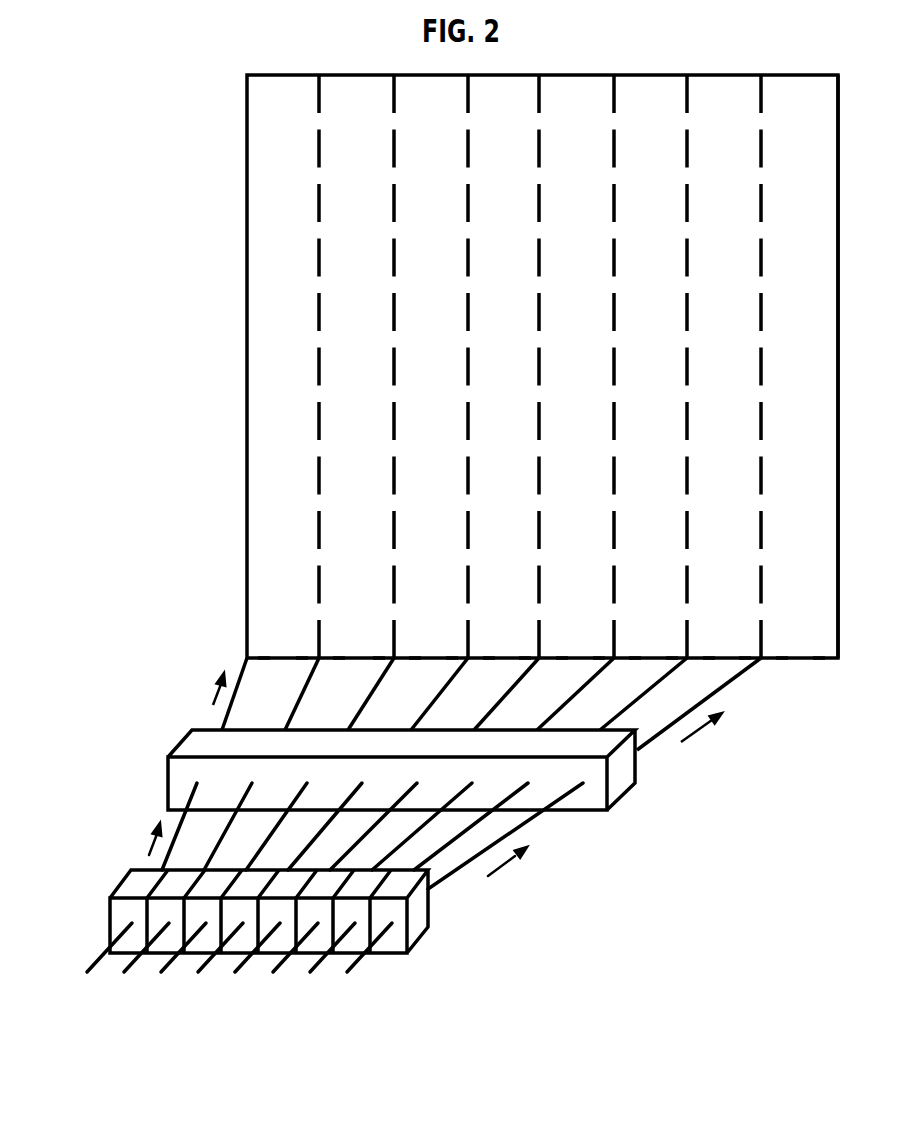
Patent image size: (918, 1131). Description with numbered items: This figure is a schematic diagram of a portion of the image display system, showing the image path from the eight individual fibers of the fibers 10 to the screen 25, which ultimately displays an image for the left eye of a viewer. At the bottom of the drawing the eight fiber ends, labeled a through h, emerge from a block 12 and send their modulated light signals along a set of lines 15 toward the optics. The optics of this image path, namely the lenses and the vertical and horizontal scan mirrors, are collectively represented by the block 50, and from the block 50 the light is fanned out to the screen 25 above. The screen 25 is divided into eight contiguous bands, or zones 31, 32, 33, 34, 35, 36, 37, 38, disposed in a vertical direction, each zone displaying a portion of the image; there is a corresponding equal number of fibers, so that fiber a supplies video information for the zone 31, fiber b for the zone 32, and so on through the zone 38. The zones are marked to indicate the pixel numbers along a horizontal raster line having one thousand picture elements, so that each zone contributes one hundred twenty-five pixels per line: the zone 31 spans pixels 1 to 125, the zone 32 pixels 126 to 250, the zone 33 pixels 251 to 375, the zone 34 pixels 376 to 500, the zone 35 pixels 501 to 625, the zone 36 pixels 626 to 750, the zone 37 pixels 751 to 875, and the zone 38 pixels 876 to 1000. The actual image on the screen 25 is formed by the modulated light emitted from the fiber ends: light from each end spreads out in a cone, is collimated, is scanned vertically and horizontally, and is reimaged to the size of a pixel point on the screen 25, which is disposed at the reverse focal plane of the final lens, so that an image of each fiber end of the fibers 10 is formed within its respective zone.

The screen 25 is at (241, 354).
The zone 31 is at (269, 120).
The zone 32 is at (342, 120).
The zone 33 is at (417, 120).
The zone 34 is at (489, 120).
The zone 35 is at (562, 120).
The zone 36 is at (636, 120).
The zone 37 is at (710, 120).
The zone 38 is at (786, 120).
The pixel number 1 is at (256, 649).
The pixel number 125 is at (294, 649).
The pixel number 126 is at (331, 649).
The pixel number 250 is at (371, 649).
The pixel number 251 is at (407, 649).
The pixel number 375 is at (444, 649).
The pixel number 376 is at (481, 649).
The pixel number 500 is at (517, 649).
The pixel number 501 is at (554, 649).
The pixel number 625 is at (591, 649).
The pixel number 626 is at (627, 649).
The pixel number 750 is at (664, 649).
The pixel number 751 is at (701, 649).
The pixel number 875 is at (737, 649).
The pixel number 876 is at (774, 649).
The pixel number 1000 is at (811, 649).
The block 50 is at (630, 797).
The signal lines 15 is at (532, 830).
The input register 12 is at (433, 912).
The fibers 10 is at (60, 1003).